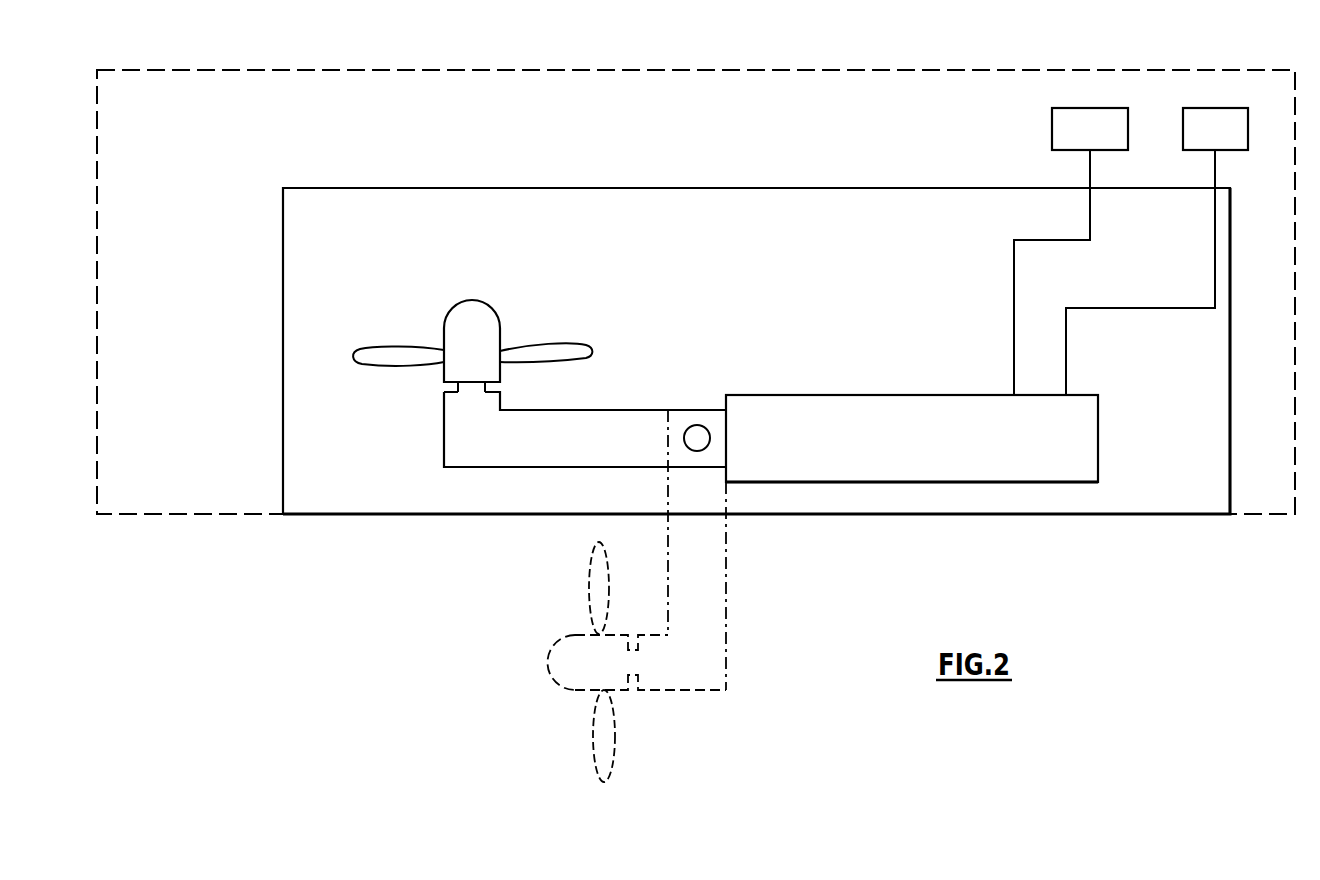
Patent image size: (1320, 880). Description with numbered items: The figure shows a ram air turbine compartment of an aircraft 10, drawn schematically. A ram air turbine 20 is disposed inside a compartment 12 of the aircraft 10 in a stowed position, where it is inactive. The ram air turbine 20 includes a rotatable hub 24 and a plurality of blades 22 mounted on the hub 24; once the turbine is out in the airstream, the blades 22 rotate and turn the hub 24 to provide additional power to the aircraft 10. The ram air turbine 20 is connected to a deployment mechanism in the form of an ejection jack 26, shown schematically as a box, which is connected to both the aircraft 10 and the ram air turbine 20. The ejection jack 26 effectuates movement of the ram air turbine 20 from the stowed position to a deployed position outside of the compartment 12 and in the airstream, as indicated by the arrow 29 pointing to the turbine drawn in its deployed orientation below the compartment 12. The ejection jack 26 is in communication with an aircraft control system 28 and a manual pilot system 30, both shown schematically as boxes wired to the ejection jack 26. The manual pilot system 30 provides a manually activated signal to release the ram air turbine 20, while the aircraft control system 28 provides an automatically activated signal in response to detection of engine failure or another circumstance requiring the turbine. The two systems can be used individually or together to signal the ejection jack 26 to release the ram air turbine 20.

The aircraft 10 is at (713, 70).
The compartment 12 is at (853, 188).
The ram air turbine 20 is at (486, 332).
The blades 22 is at (383, 367).
The rotatable hub 24 is at (473, 301).
The ejection jack 26 is at (885, 395).
The aircraft control system 28 is at (1052, 125).
The arrow 29 is at (658, 540).
The manual pilot system 30 is at (1247, 108).